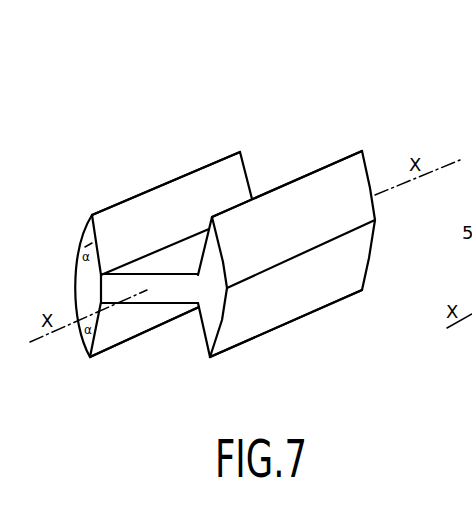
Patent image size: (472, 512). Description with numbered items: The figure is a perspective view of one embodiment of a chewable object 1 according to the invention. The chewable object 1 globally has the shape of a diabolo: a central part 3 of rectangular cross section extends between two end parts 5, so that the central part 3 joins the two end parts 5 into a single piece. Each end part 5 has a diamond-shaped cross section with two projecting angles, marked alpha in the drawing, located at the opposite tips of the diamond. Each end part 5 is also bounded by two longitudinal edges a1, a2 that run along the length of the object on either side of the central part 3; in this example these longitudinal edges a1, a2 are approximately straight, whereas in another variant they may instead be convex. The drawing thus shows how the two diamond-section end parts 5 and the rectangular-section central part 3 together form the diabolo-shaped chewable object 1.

The chewable object 1 is at (210, 236).
The central part 3 is at (175, 285).
The end part 5 is at (86, 272).
The longitudinal edge a1 is at (323, 166).
The longitudinal edge a2 is at (122, 352).